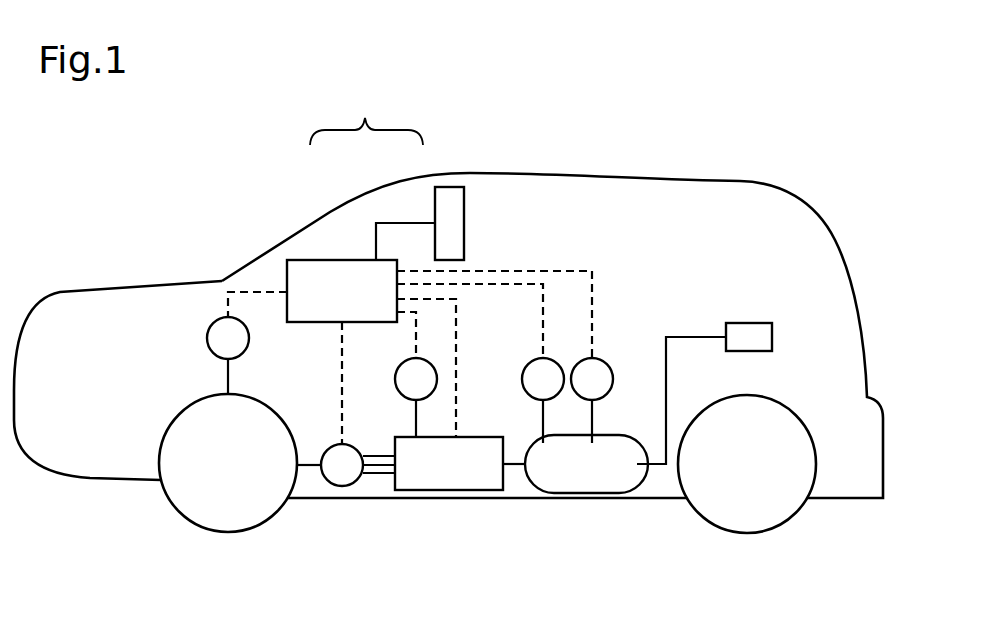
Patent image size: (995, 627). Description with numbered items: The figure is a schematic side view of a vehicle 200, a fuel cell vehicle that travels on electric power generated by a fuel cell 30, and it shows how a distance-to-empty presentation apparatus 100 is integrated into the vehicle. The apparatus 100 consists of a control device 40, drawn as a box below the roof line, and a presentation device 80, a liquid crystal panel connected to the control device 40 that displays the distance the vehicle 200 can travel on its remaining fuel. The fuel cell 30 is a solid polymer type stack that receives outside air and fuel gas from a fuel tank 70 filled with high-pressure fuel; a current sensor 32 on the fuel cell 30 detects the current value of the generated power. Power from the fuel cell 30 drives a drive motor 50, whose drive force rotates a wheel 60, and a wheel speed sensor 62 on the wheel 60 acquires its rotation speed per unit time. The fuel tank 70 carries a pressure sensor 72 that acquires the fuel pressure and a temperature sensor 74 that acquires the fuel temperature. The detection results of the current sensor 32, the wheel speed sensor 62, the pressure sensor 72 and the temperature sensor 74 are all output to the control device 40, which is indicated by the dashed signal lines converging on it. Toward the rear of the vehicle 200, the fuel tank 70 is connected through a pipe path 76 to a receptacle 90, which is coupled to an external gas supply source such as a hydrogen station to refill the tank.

The vehicle 200 is at (617, 178).
The distance-to-empty presentation apparatus 100 is at (366, 118).
The control device 40 is at (313, 260).
The presentation device 80 is at (433, 203).
The wheel speed sensor 62 is at (207, 338).
The wheel 60 is at (179, 414).
The drive motor 50 is at (327, 450).
The current sensor 32 is at (395, 380).
The fuel cell 30 is at (448, 492).
The pressure sensor 72 is at (522, 380).
The temperature sensor 74 is at (613, 380).
The fuel tank 70 is at (585, 493).
The pipe path 76 is at (700, 337).
The receptacle 90 is at (752, 323).